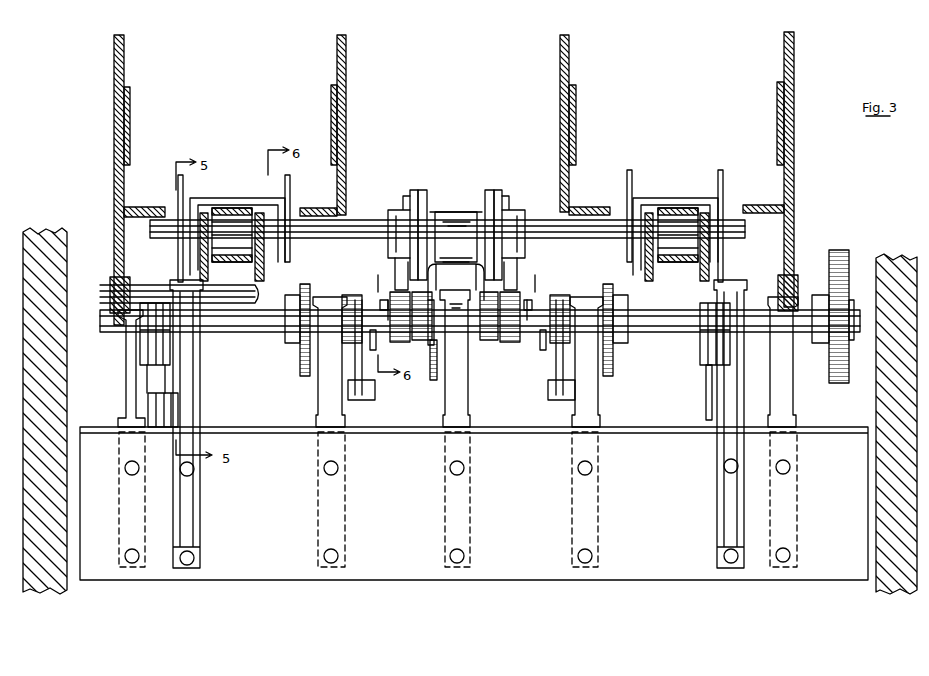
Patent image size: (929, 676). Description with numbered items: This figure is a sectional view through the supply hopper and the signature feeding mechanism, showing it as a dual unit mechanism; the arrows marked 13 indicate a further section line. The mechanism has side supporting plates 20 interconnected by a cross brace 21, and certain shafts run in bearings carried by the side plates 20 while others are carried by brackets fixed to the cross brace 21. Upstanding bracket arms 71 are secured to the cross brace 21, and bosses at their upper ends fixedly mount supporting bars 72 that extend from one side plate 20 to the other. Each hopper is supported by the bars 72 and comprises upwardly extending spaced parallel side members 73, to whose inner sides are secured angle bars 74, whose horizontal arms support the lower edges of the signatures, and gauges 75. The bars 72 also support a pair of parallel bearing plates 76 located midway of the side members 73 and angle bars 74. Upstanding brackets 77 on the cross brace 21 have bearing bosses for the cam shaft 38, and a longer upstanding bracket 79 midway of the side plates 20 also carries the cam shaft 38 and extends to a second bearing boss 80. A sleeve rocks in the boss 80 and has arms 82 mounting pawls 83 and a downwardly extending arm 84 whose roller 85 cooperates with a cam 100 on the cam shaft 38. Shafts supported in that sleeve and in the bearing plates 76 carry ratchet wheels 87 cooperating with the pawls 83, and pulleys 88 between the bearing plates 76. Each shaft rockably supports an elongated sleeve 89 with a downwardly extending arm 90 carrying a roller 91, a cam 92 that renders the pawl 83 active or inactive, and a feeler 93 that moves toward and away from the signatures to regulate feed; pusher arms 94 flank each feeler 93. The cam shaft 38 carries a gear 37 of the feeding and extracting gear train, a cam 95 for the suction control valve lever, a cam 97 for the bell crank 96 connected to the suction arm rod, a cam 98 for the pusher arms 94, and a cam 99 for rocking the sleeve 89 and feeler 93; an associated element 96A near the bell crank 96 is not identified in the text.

The side supporting plates 20 is at (67, 372).
The cross brace 21 is at (640, 438).
The slot / section line 13 is at (138, 285).
The gear 37 is at (839, 250).
The cam shaft 38 is at (262, 333).
The upstanding bracket arms 71 is at (196, 420).
The supporting bars 72 is at (245, 304).
The side members 73 is at (124, 56).
The angle bars 74 is at (146, 207).
The gauges 75 is at (130, 115).
The bearing plates 76 is at (200, 230).
The upstanding brackets 77 is at (124, 414).
The longer upstanding bracket 79 is at (468, 405).
The second bearing boss 80 is at (446, 212).
The arms 82 is at (422, 190).
The pawls 83 is at (414, 190).
The downwardly extending arm 84 is at (426, 292).
The roller 85 is at (448, 288).
The ratchet wheel 87 is at (517, 198).
The pulleys 88 is at (232, 215).
The elongated sleeve 89 is at (350, 220).
The downwardly extending arm 90 is at (395, 262).
The roller 91 is at (372, 290).
The cam 92 is at (403, 200).
The feeler 93 is at (218, 200).
The pusher arms 94 is at (181, 176).
The cam 95 is at (170, 340).
The bell crank 96 is at (360, 375).
The pawl strip 96A is at (372, 340).
The cam 97 is at (350, 295).
The cam 98 is at (305, 286).
The cam 99 is at (400, 346).
The cam 100 is at (432, 365).